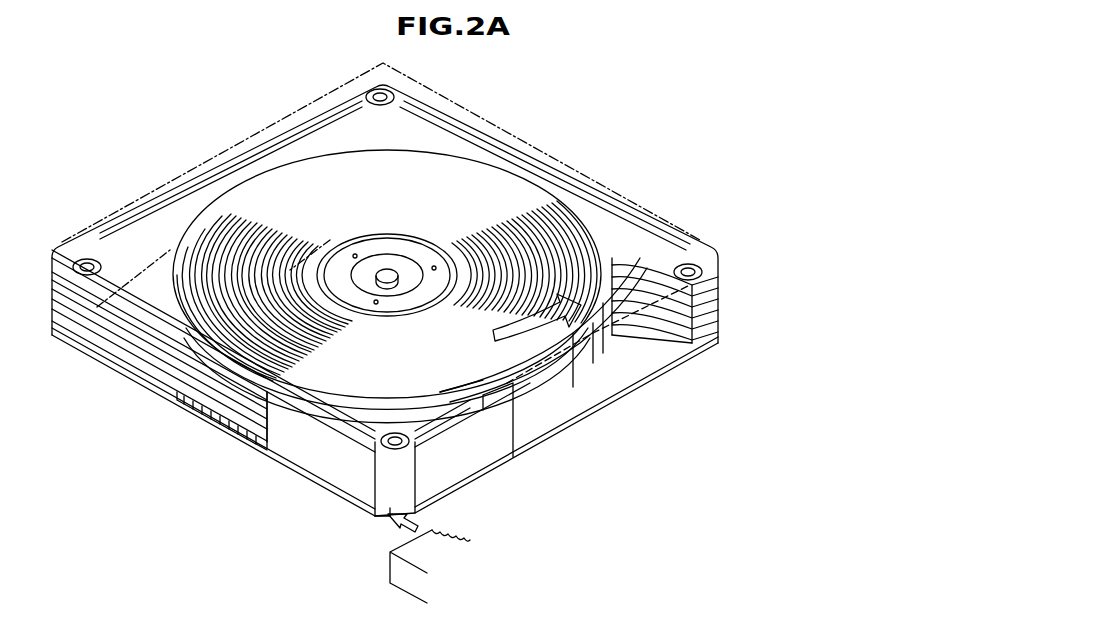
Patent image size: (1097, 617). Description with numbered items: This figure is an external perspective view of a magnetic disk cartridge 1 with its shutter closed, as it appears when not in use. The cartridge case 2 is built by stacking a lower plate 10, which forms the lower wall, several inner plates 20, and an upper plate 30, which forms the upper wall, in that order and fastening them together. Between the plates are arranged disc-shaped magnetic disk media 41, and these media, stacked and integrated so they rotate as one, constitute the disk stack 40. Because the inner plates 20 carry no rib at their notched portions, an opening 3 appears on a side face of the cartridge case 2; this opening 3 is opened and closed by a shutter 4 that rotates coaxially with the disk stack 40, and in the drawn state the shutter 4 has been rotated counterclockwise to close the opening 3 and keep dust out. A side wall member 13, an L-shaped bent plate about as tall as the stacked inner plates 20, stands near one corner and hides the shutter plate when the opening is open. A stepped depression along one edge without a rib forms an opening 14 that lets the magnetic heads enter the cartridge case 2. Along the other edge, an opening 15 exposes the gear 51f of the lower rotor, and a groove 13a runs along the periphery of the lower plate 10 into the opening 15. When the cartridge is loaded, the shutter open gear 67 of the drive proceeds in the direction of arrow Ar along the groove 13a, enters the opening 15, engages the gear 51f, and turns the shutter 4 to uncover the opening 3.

The magnetic disk cartridge 1 is at (502, 95).
The cartridge case 2 is at (532, 125).
The opening 3 is at (653, 366).
The shutter 4 is at (556, 406).
The lower plate 10 is at (731, 353).
The side wall member 13 is at (458, 462).
The groove 13a is at (322, 488).
The opening 14 is at (535, 427).
The opening 15 is at (178, 400).
The inner plates 20 is at (724, 284).
The upper plate 30 is at (713, 230).
The disk stack 40 is at (387, 291).
The magnetic disk medium 41 is at (500, 200).
The gear 51f is at (215, 420).
The shutter open gear 67 is at (405, 590).
The arrow Ar is at (398, 526).